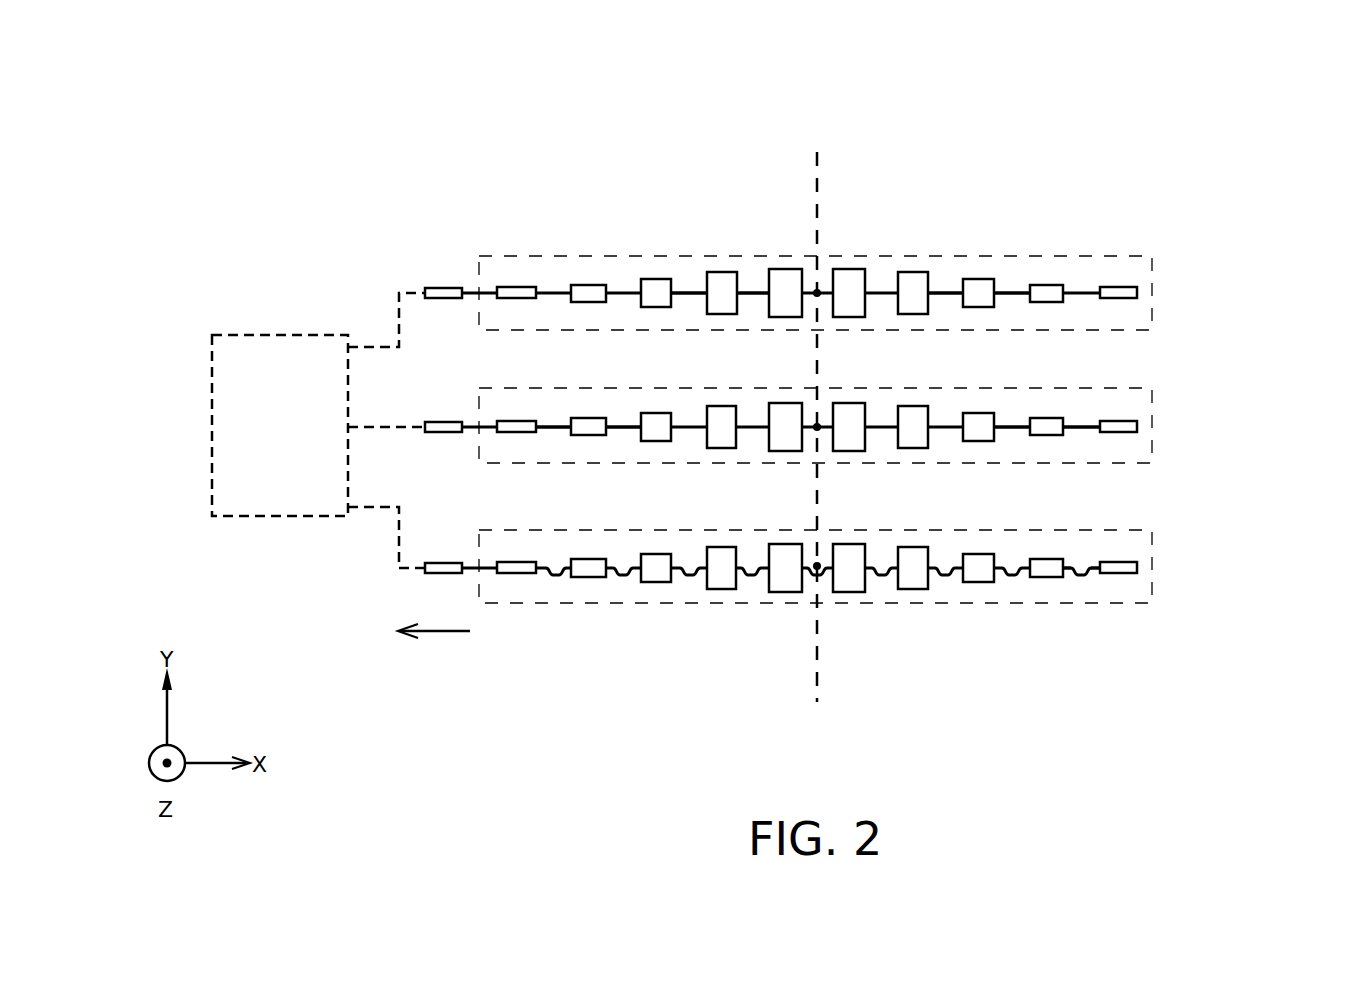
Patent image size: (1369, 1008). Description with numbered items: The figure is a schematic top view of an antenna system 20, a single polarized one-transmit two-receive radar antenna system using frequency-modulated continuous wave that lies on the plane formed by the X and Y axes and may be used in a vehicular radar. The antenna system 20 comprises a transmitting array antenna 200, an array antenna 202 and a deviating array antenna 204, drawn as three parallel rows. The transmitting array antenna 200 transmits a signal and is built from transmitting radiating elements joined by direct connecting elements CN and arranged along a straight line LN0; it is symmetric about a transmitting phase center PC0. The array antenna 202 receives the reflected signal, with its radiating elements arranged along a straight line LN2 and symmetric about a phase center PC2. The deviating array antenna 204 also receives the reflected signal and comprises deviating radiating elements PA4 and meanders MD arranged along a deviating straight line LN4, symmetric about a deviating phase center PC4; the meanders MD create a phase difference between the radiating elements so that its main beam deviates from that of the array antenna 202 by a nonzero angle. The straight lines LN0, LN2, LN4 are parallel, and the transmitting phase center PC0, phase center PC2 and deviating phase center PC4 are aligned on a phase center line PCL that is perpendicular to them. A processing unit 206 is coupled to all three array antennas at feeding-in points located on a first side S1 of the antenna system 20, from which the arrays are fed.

The antenna system 20 is at (1240, 118).
The transmitting array antenna 200 is at (1152, 290).
The array antenna 202 is at (1152, 425).
The deviating array antenna 204 is at (1152, 565).
The processing unit 206 is at (245, 333).
The deviating radiating elements PA4 is at (513, 573).
The direct connecting elements CN is at (688, 296).
The meanders MD is at (690, 572).
The straight line LN0 is at (948, 290).
The straight line LN2 is at (1085, 422).
The deviating straight line LN4 is at (1098, 563).
The transmitting phase center PC0 is at (819, 290).
The phase center PC2 is at (819, 425).
The deviating phase center PC4 is at (819, 564).
The phase center line PCL is at (819, 445).
The first side S1 is at (434, 617).